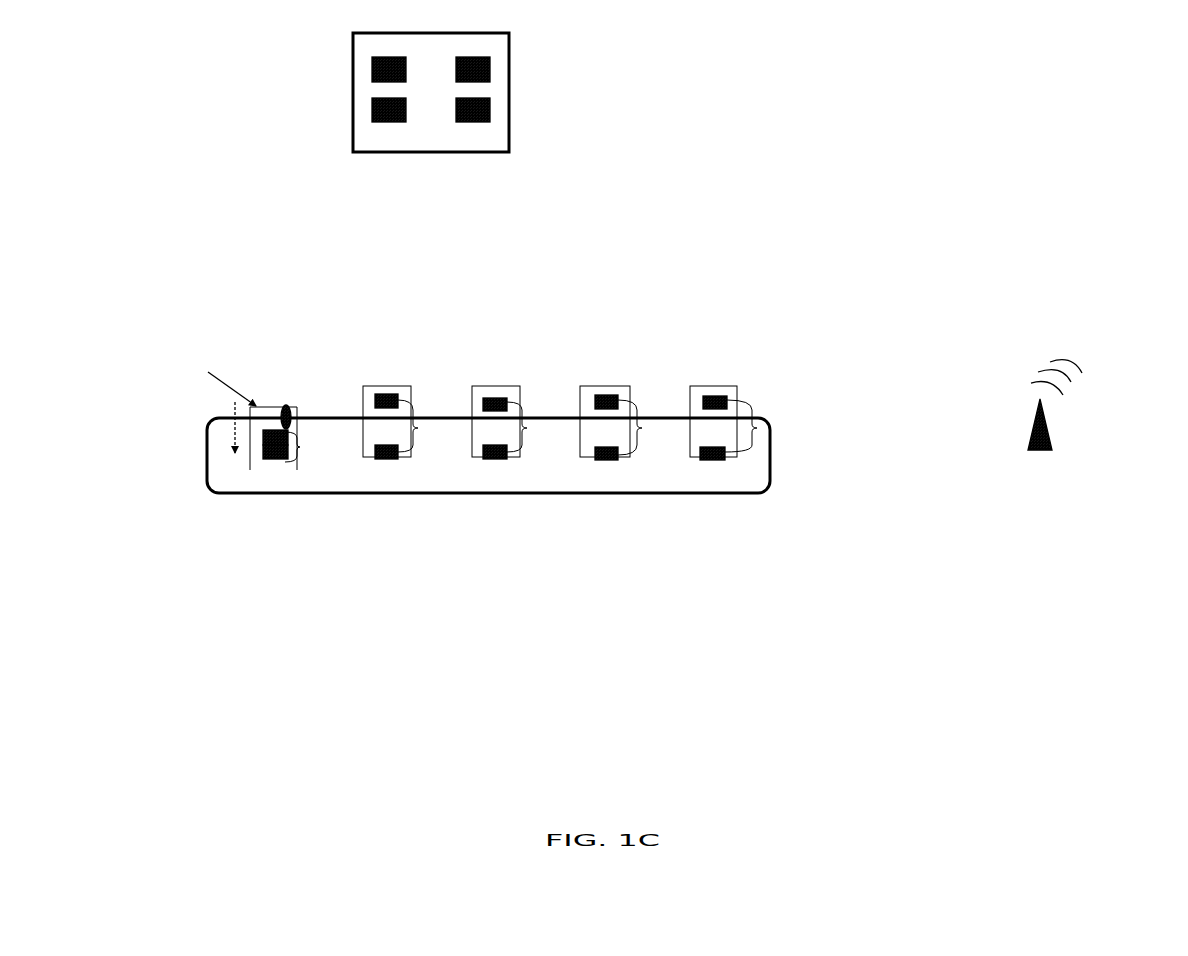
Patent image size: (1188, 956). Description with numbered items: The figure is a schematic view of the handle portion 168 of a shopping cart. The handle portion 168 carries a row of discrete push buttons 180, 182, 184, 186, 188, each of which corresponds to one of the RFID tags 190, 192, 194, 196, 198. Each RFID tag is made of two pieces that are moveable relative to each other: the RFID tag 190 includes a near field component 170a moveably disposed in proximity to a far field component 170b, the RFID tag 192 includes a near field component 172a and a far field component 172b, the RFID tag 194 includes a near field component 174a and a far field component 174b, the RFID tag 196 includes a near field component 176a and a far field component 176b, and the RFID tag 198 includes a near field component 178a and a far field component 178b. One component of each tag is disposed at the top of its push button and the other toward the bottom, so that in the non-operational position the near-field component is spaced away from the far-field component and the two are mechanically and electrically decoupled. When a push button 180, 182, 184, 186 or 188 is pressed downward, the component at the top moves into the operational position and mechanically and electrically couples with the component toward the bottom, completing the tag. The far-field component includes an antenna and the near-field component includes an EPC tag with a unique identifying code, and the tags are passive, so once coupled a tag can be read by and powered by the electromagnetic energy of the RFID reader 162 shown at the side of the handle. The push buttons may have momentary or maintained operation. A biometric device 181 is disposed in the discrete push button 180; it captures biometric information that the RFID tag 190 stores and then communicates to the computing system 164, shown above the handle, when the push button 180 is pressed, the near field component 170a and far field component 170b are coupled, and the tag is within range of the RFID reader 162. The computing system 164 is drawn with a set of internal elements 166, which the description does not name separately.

The RFID reader 162 is at (1045, 423).
The computing system 164 is at (512, 58).
The external coils 166 is at (490, 108).
The handle portion 168 is at (205, 456).
The near field component 170a is at (273, 428).
The far field component 170b is at (277, 460).
The near field component 172a is at (392, 394).
The far field component 172b is at (385, 459).
The near field component 174a is at (494, 398).
The far field component 174b is at (489, 460).
The near field component 176a is at (600, 395).
The far field component 176b is at (608, 461).
The near field component 178a is at (712, 396).
The far field component 178b is at (717, 461).
The discrete push button 180 is at (250, 465).
The biometric device 181 is at (288, 414).
The discrete push button 182 is at (370, 423).
The discrete push button 184 is at (512, 440).
The discrete push button 186 is at (583, 440).
The discrete push button 188 is at (737, 430).
The RFID tag 190 is at (300, 447).
The RFID tag 192 is at (418, 428).
The RFID tag 194 is at (527, 428).
The RFID tag 196 is at (642, 428).
The RFID tag 198 is at (762, 428).